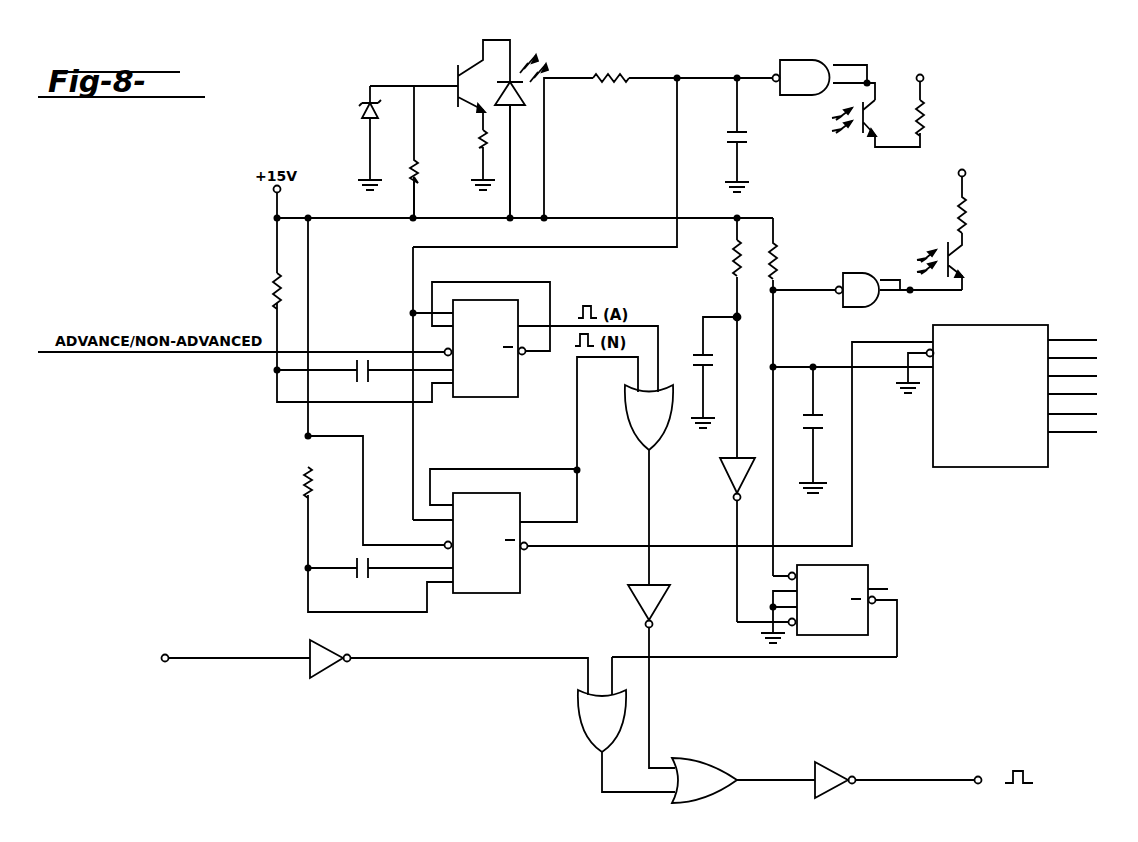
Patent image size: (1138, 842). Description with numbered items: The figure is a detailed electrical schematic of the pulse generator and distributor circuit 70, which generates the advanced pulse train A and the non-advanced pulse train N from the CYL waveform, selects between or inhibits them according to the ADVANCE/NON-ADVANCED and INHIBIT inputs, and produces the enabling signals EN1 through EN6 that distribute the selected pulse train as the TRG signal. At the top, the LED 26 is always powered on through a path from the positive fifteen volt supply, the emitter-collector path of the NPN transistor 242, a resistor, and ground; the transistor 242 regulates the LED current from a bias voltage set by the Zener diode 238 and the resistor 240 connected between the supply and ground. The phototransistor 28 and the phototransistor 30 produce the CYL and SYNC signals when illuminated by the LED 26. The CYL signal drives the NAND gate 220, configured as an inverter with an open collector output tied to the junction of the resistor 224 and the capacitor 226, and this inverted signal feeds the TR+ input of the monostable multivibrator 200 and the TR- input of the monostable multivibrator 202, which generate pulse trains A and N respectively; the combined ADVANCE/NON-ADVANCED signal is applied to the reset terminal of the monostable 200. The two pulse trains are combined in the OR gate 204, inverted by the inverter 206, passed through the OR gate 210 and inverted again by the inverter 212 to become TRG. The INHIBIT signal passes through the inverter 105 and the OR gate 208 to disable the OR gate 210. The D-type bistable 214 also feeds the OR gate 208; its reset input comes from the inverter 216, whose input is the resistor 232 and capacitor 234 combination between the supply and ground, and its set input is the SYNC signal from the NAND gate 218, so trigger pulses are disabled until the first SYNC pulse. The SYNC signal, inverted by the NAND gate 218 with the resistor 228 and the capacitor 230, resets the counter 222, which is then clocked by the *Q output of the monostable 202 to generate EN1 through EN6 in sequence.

The LED 26 is at (520, 100).
The phototransistor 28 is at (850, 140).
The phototransistor 30 is at (962, 262).
The pulse generator and distributor circuit 70 is at (1053, 86).
The inverter 105 is at (325, 668).
The monostable multivibrator 200 is at (530, 378).
The monostable multivibrator 202 is at (524, 565).
The OR gate 204 is at (634, 445).
The inverter 206 is at (660, 605).
The OR gate 208 is at (578, 720).
The OR gate 210 is at (705, 758).
The inverter 212 is at (826, 768).
The D-type bistable 214 is at (862, 565).
The inverter 216 is at (728, 478).
The NAND gate 218 is at (860, 272).
The NAND gate 220 is at (812, 62).
The synchronous sequential counter 222 is at (1000, 467).
The resistor 224 is at (612, 74).
The capacitor 226 is at (747, 134).
The resistor 228 is at (777, 262).
The capacitor 230 is at (808, 436).
The resistor 232 is at (733, 250).
The capacitor 234 is at (700, 348).
The Zener diode 238 is at (364, 106).
The resistor 240 is at (420, 168).
The NPN transistor 242 is at (458, 68).